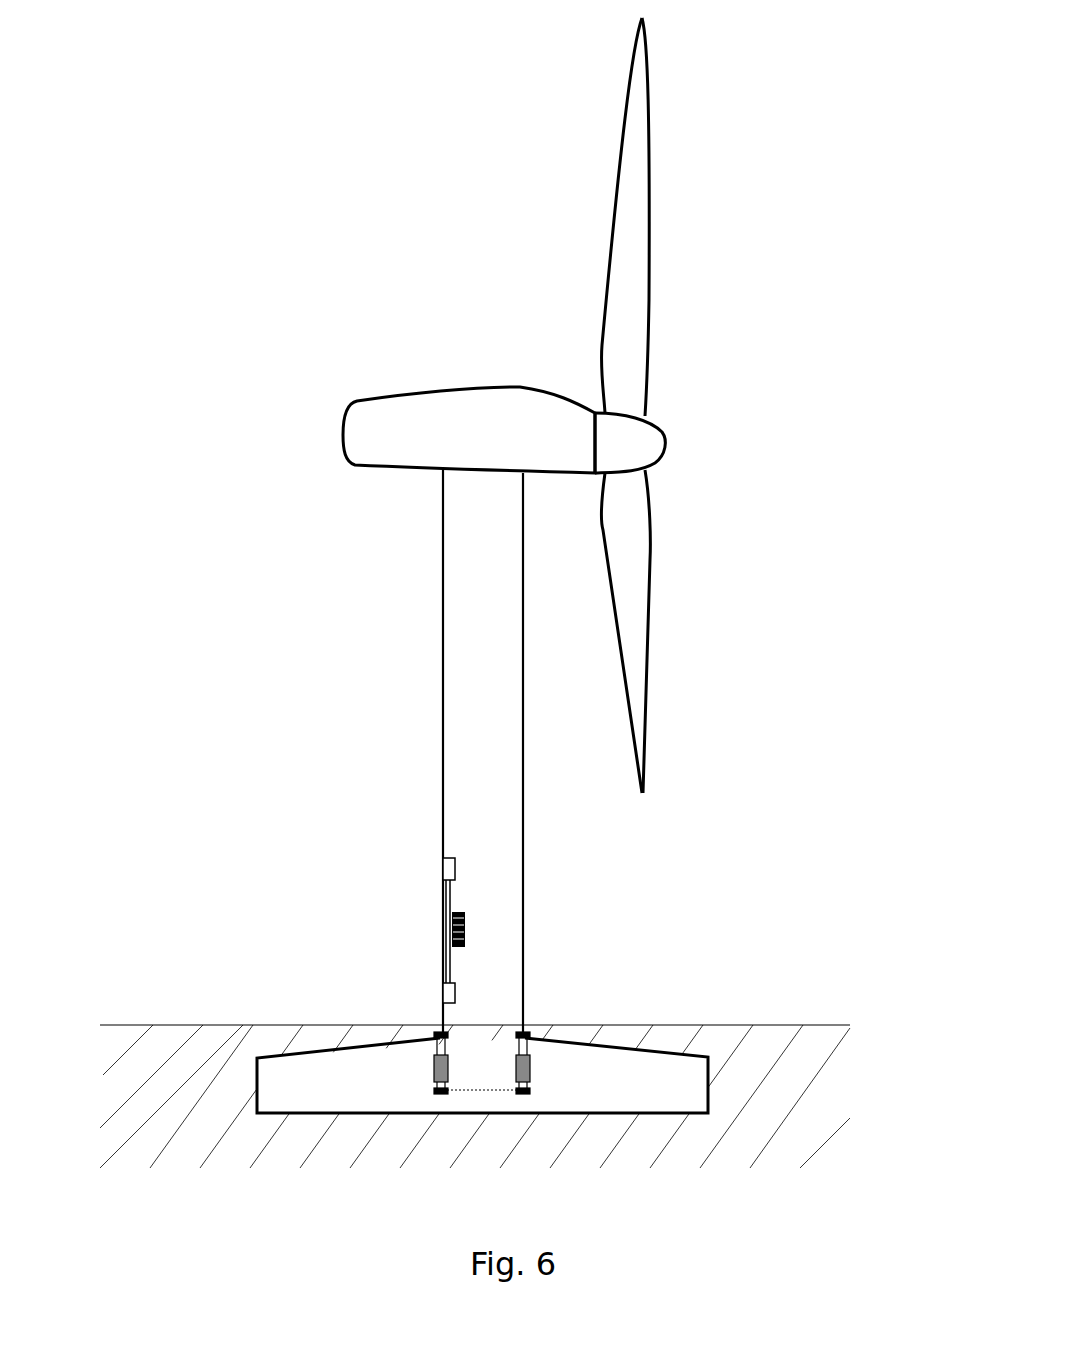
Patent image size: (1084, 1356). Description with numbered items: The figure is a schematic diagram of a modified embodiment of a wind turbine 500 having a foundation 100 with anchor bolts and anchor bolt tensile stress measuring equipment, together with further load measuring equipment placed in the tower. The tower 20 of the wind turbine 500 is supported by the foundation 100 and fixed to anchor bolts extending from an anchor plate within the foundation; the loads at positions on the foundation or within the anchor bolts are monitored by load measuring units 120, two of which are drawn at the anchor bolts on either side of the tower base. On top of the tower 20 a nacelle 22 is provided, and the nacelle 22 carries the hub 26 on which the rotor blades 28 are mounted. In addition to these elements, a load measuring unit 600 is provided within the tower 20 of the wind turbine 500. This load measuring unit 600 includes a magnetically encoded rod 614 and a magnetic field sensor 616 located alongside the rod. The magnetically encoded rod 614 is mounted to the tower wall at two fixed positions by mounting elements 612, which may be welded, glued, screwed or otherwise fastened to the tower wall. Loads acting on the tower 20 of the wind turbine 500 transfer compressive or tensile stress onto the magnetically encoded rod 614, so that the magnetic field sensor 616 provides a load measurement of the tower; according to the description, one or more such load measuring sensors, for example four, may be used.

The wind turbine 500 is at (268, 136).
The tower 20 is at (524, 845).
The nacelle 22 is at (352, 400).
The hub 26 is at (665, 432).
The rotor blades 28 is at (640, 320).
The foundation 100 is at (580, 1040).
The load measuring units 120 is at (436, 1082).
The load measuring unit 600 is at (394, 938).
The mounting elements 612 is at (443, 870).
The magnetically encoded rod 614 is at (450, 893).
The magnetic field sensor 616 is at (465, 930).